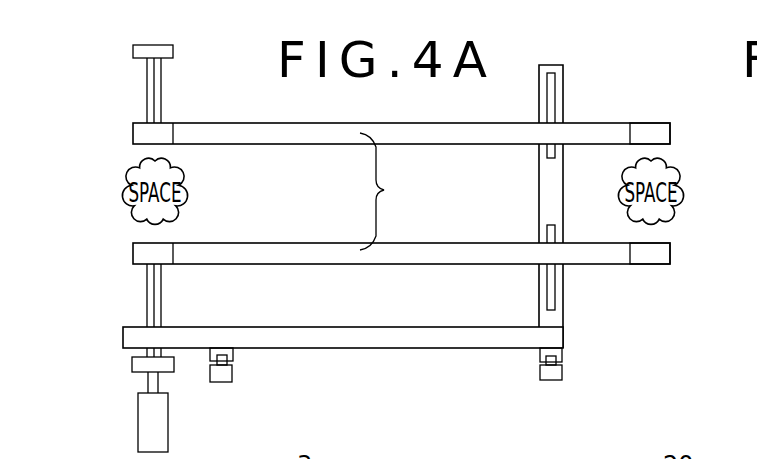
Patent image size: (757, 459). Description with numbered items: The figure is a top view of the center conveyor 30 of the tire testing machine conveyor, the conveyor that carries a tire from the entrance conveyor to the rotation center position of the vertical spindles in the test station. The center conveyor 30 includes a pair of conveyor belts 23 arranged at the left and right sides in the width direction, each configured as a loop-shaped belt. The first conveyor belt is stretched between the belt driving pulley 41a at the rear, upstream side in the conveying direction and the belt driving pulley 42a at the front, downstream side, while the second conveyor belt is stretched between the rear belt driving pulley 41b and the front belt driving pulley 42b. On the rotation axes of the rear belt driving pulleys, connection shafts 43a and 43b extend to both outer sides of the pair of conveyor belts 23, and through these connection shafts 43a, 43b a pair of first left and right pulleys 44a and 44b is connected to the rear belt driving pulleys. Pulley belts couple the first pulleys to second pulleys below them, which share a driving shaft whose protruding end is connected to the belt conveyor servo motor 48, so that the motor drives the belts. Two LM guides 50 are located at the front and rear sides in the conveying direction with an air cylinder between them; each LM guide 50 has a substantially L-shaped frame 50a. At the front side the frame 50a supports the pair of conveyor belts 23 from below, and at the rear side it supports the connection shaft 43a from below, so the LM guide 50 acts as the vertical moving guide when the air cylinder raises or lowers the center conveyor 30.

The pair of conveyor belts 23 is at (394, 191).
The center conveyor 30 is at (591, 102).
The belt driving pulley 41a is at (133, 253).
The belt driving pulley 41b is at (133, 133).
The belt driving pulley 42a is at (670, 252).
The belt driving pulley 42b is at (670, 132).
The connection shaft 43a is at (161, 293).
The connection shaft 43b is at (161, 88).
The first pulley 44a is at (132, 362).
The first pulley 44b is at (133, 52).
The belt conveyor servo motor 48 is at (138, 416).
The LM guide 50 is at (233, 351).
The frame 50a is at (370, 337).